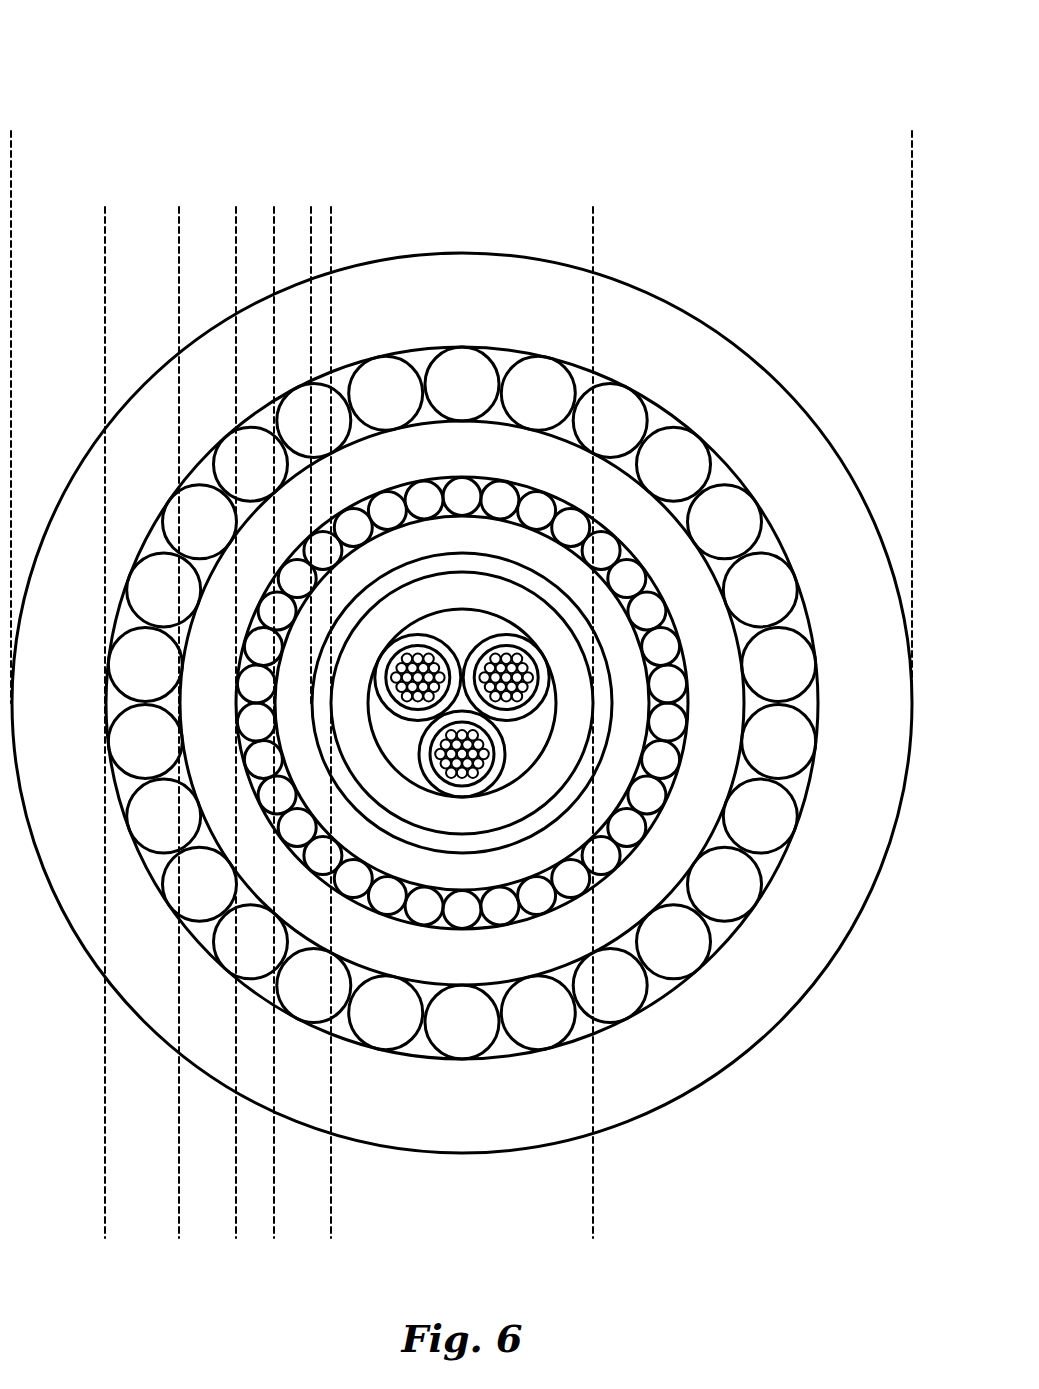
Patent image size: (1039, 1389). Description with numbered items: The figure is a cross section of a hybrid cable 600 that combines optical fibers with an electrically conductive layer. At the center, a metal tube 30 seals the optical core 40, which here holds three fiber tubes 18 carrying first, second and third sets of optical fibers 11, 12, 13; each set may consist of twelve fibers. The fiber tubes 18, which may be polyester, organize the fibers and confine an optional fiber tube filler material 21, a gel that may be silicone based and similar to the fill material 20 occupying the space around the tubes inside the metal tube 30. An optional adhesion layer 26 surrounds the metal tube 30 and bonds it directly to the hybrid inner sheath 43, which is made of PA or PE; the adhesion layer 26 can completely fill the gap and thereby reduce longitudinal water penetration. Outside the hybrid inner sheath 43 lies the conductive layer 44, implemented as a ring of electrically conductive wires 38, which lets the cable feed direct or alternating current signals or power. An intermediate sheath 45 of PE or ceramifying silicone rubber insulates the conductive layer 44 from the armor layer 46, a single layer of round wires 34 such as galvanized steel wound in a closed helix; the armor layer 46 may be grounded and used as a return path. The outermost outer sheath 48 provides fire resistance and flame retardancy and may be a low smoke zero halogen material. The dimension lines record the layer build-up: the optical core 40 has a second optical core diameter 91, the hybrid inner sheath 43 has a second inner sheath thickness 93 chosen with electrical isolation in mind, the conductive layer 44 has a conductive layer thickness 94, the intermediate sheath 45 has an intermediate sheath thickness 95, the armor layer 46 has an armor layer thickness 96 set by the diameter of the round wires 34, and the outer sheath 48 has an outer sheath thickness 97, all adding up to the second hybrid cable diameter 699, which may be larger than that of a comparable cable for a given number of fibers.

The hybrid cable 600 is at (123, 65).
The second hybrid cable diameter 699 is at (11, 122).
The outer sheath thickness 97 is at (11, 198).
The armor layer thickness 96 is at (179, 198).
The intermediate sheath thickness 95 is at (236, 198).
The conductive layer thickness 94 is at (274, 216).
The second inner sheath thickness 93 is at (274, 207).
The second optical core diameter 91 is at (311, 207).
The armor layer 46 is at (105, 1229).
The conductive layer 44 is at (236, 1229).
The optical core 40 is at (331, 1229).
The round wires 34 is at (461, 703).
The electrically conductive wires 38 is at (250, 642).
The outer sheath 48 is at (462, 729).
The intermediate sheath 45 is at (462, 703).
The hybrid inner sheath 43 is at (462, 703).
The adhesion layer 26 is at (525, 580).
The metal tube 30 is at (462, 703).
The fill material 20 is at (470, 616).
The fiber tube filler material 21 is at (538, 700).
The fiber tubes 18 is at (386, 703).
The third set of optical fibers 13 is at (416, 660).
The first set of optical fibers 11 is at (508, 660).
The second set of optical fibers 12 is at (445, 752).